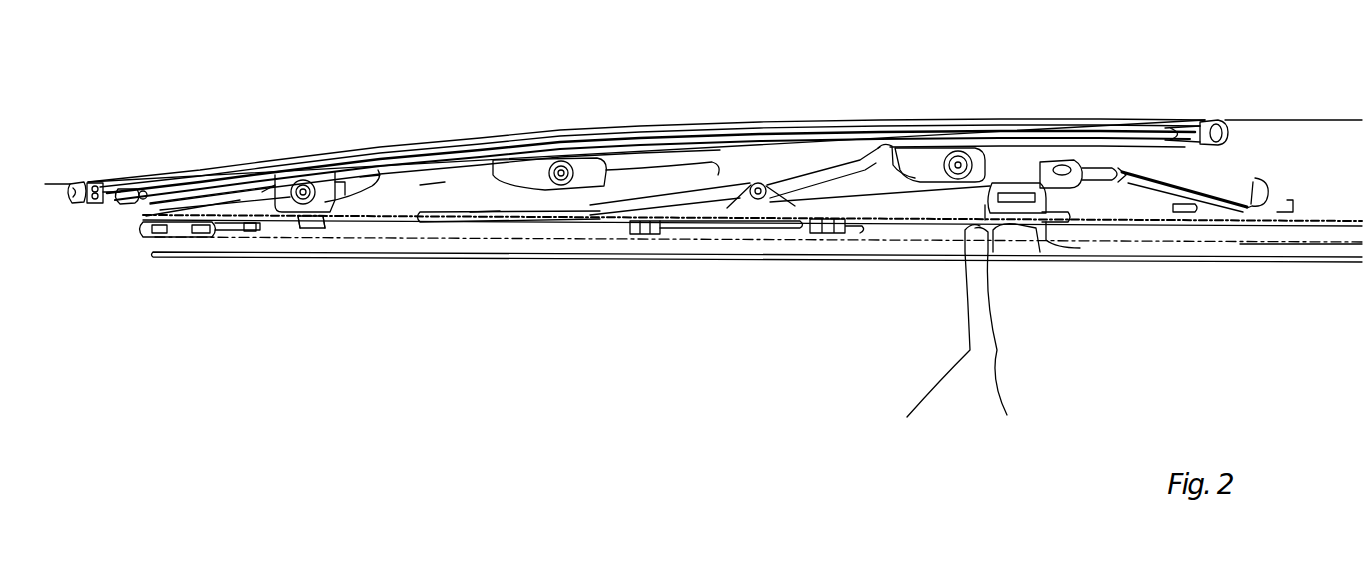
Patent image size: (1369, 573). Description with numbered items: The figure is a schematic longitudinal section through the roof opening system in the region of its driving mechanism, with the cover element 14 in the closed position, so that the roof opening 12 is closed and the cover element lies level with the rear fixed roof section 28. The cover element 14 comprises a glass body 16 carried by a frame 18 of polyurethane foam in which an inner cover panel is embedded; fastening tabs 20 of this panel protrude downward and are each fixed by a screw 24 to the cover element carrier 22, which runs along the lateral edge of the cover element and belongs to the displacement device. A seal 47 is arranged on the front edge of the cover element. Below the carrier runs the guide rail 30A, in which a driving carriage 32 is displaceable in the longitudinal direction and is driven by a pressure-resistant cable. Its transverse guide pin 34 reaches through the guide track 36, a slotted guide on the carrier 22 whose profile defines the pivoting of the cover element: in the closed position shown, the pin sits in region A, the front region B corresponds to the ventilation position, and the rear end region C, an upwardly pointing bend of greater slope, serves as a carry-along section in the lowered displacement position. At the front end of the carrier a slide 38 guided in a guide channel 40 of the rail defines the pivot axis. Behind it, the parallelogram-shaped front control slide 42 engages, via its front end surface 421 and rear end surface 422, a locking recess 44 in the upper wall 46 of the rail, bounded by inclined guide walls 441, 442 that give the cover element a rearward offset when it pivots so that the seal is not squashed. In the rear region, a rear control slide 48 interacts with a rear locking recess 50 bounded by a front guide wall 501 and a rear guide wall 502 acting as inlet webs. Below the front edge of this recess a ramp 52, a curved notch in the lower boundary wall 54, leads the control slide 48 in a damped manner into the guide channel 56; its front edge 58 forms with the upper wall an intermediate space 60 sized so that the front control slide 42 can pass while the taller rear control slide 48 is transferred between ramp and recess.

The roof opening 12 is at (1222, 120).
The cover element 14 is at (257, 158).
The glass body 16 is at (178, 168).
The frame 18 is at (104, 182).
The fastening tabs 20 is at (363, 186).
The cover element carrier 22 is at (431, 186).
The screw 24 is at (308, 180).
The rear fixed roof section 28 is at (1287, 119).
The guide rail 30A is at (777, 243).
The driving carriage 32 is at (697, 222).
The guide pin 34 is at (752, 196).
The guide track 36 is at (558, 222).
The slide 38 is at (173, 237).
The guide channel 40 is at (227, 228).
The front control slide 42 is at (313, 227).
The locking recess 44 is at (343, 188).
The upper wall 46 is at (248, 221).
The seal 47 is at (80, 180).
The rear control slide 48 is at (1018, 200).
The rear locking recess 50 is at (1040, 215).
The ramp 52 is at (1003, 240).
The lower boundary wall 54 is at (1303, 263).
The guide channel 56 is at (1265, 245).
The front edge 58 is at (1003, 342).
The intermediate space 60 is at (929, 340).
The front end surface 421 is at (292, 223).
The rear end surface 422 is at (340, 223).
The guide wall 441 is at (298, 178).
The guide wall 442 is at (381, 188).
The front guide wall 501 is at (987, 212).
The rear guide wall 502 is at (1062, 222).
The region A is at (752, 184).
The front region B is at (483, 222).
The rear guide track end region C is at (873, 150).